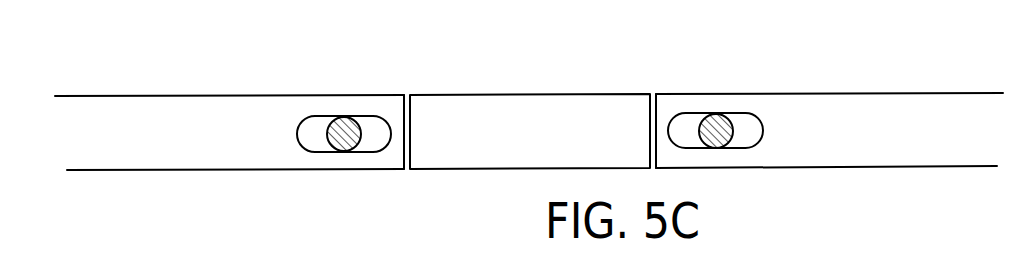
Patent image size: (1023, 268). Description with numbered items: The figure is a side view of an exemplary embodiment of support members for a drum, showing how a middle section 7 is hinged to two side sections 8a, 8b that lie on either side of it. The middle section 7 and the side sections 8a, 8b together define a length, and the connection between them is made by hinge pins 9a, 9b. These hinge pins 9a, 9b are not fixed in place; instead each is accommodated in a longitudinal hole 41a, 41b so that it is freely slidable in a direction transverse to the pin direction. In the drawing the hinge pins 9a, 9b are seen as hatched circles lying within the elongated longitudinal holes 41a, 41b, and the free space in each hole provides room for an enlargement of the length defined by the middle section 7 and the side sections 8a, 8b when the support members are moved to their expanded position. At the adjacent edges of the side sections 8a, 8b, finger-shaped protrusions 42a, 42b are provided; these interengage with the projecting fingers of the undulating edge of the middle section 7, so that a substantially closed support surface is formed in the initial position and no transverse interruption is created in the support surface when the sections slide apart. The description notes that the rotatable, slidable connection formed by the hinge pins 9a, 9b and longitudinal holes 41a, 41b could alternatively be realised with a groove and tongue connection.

The middle section 7 is at (540, 142).
The side section 8a is at (952, 143).
The side section 8b is at (147, 155).
The hinge pin 9a is at (683, 125).
The hinge pin 9b is at (372, 128).
The longitudinal hole 41a is at (735, 118).
The longitudinal hole 41b is at (327, 128).
The finger-shaped protrusion 42a is at (667, 103).
The finger-shaped protrusion 42b is at (393, 105).